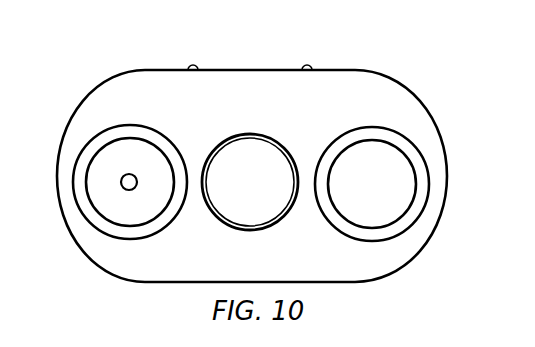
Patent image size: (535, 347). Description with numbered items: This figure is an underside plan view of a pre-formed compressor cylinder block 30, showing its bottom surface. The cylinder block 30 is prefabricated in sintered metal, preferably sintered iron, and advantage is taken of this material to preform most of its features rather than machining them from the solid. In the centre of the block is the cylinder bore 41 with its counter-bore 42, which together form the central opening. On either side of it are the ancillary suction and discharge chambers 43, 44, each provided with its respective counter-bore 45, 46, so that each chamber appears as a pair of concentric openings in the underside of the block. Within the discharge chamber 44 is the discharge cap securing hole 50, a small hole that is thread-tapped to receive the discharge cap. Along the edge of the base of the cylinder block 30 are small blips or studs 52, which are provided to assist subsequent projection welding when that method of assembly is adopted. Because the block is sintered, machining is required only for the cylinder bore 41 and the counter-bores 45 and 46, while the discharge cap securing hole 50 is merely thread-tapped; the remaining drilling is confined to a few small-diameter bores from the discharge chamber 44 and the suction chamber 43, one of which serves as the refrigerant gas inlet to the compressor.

The cylinder block 30 is at (252, 176).
The cylinder bore 41 is at (246, 147).
The counter-bore 42 is at (218, 144).
The suction chamber 43 is at (390, 177).
The discharge chamber 44 is at (100, 168).
The counter-bore 45 is at (393, 141).
The counter-bore 46 is at (103, 138).
The discharge cap securing hole 50 is at (127, 187).
The blips or studs 52 is at (310, 66).